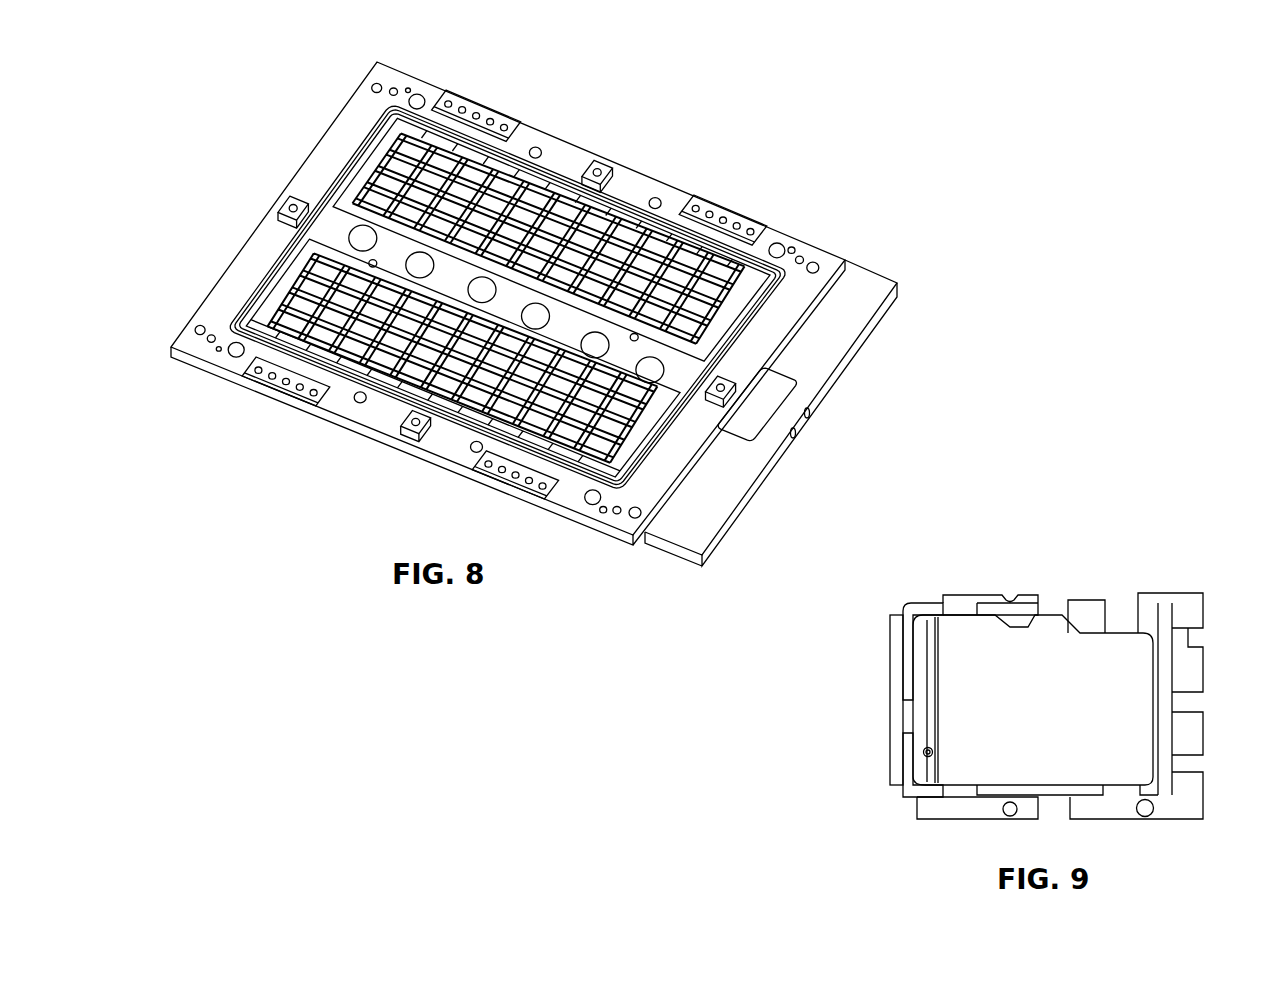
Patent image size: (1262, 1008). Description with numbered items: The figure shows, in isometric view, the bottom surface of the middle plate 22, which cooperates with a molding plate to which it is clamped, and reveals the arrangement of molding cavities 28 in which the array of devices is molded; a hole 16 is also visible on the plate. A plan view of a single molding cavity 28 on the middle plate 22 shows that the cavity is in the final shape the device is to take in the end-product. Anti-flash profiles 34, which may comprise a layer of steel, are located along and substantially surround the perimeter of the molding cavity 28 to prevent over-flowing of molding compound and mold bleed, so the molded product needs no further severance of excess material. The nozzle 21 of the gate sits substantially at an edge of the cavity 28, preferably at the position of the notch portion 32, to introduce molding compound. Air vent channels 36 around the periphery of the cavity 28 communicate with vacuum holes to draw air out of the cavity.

In FIG. 8, the hole 16 is at (357, 233).
In FIG. 8, the middle plate 22 is at (873, 168).
In FIG. 8, the molding cavity 28 is at (673, 250).
In FIG. 9, the molding cavity 28 is at (1131, 718).
In FIG. 9, the anti-flash profiles 34 is at (921, 605).
In FIG. 9, the notch portion 32 is at (922, 714).
In FIG. 9, the nozzle 21 is at (920, 752).
In FIG. 9, the air vent channels 36 is at (1053, 820).